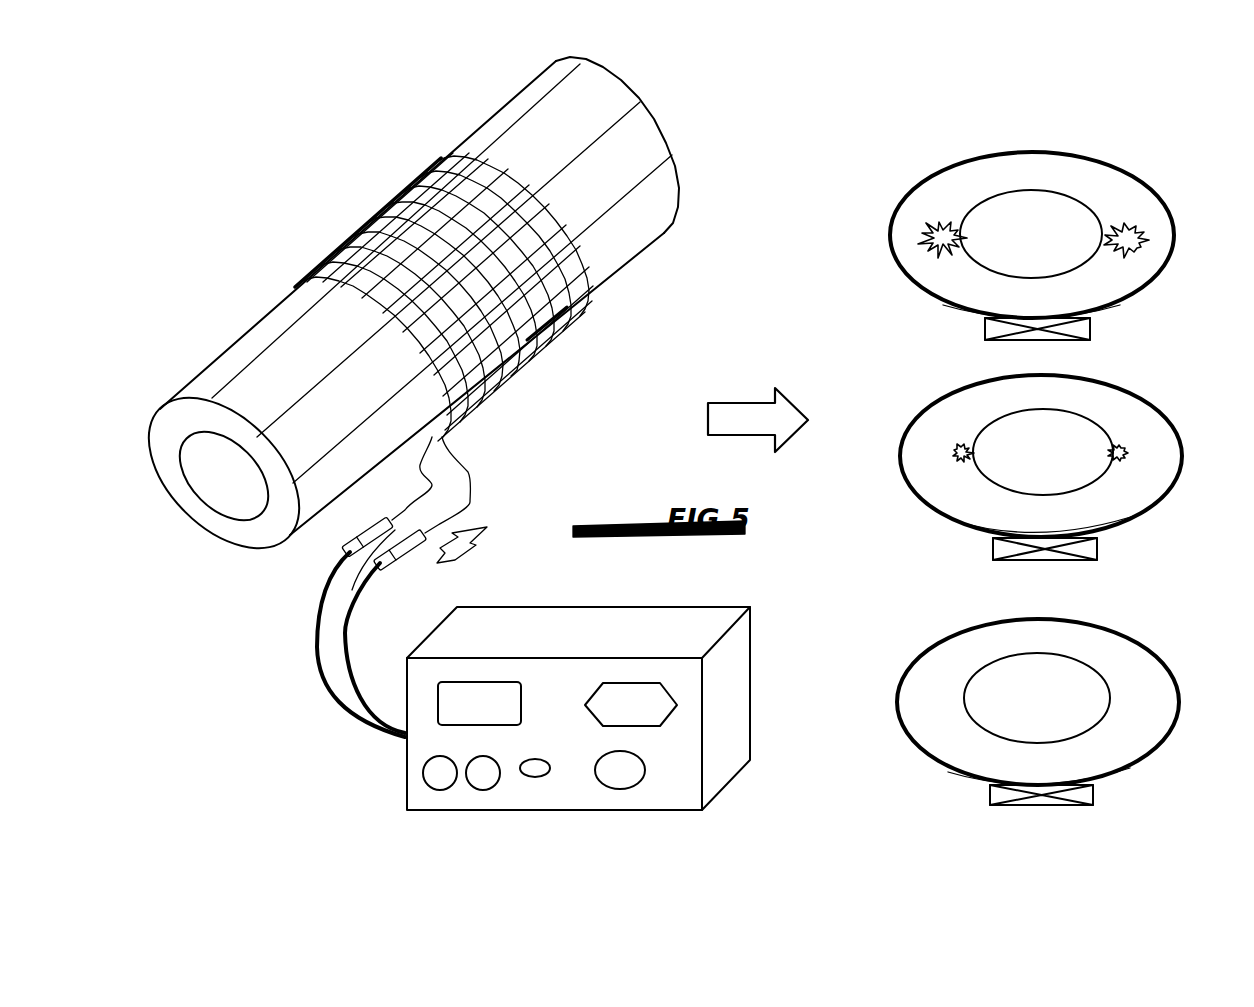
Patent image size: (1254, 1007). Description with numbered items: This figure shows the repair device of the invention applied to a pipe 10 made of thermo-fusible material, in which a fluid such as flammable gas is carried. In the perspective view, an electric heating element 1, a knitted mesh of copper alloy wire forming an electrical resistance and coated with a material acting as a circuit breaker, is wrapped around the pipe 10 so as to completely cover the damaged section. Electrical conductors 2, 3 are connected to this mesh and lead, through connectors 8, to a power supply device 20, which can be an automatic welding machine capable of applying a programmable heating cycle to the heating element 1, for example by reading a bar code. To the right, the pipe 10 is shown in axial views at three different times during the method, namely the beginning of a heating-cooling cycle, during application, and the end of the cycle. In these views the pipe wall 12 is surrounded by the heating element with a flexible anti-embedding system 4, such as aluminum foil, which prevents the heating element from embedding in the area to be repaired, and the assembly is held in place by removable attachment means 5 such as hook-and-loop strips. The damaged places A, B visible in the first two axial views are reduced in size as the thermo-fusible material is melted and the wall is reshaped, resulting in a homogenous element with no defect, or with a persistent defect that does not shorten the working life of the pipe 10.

The electric heating element 1 is at (450, 195).
The pipe 10 is at (685, 132).
The electrical conductor 2 is at (425, 485).
The electrical conductor 3 is at (472, 486).
The connectors 8 is at (378, 535).
The power supply device 20 is at (573, 777).
The flexible anti-embedding system 4 is at (1175, 242).
The inner wall of tube 12 is at (986, 258).
The removable attachment means 5 is at (1075, 336).
The damaged place A is at (938, 222).
The damaged place B is at (1125, 228).